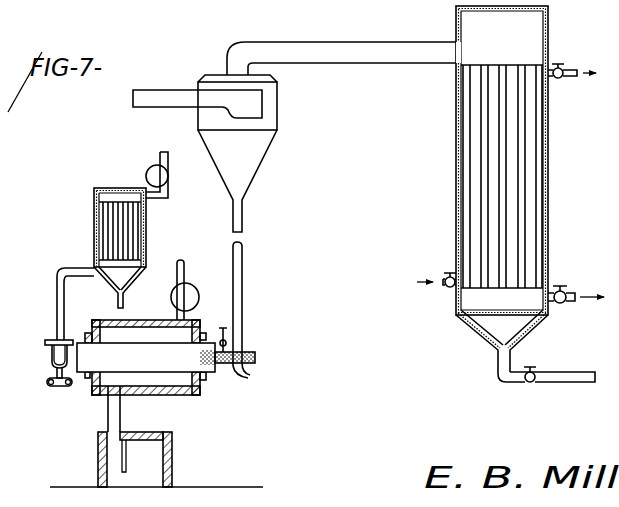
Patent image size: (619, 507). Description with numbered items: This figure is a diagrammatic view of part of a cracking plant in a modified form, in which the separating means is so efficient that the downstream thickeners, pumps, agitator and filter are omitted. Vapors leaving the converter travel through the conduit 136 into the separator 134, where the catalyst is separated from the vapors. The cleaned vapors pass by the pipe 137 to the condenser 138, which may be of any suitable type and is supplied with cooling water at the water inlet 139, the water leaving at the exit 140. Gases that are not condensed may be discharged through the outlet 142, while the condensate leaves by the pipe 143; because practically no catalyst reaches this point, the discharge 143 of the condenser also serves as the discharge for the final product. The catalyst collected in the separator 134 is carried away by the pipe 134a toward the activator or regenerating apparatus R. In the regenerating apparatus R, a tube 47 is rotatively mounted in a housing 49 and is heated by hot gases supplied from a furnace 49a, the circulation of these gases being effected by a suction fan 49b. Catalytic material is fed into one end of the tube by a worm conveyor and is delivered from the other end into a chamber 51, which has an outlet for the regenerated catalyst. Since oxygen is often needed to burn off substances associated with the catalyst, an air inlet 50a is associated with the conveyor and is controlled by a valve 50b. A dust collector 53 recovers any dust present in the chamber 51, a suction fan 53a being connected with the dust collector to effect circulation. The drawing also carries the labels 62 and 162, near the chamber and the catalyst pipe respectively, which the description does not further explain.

The tube 47 is at (153, 367).
The housing 49 is at (200, 390).
The furnace 49a is at (170, 450).
The suction fan 49b is at (208, 272).
The air inlet 50a is at (227, 333).
The valve 50b is at (226, 340).
The chamber 51 is at (52, 356).
The dust collector 53 is at (94, 227).
The suction fan 53a is at (168, 170).
The nozzle valve 62 is at (61, 390).
The separator 134 is at (277, 117).
The pipe 134a is at (238, 290).
The conduit 136 is at (180, 87).
The pipe 137 is at (378, 52).
The condenser 138 is at (548, 180).
The water inlet 139 is at (442, 287).
The water exit 140 is at (578, 66).
The outlet 142 is at (572, 288).
The pipe 143 is at (558, 377).
The discharge hook 162 is at (260, 374).
The regenerating apparatus R is at (143, 320).